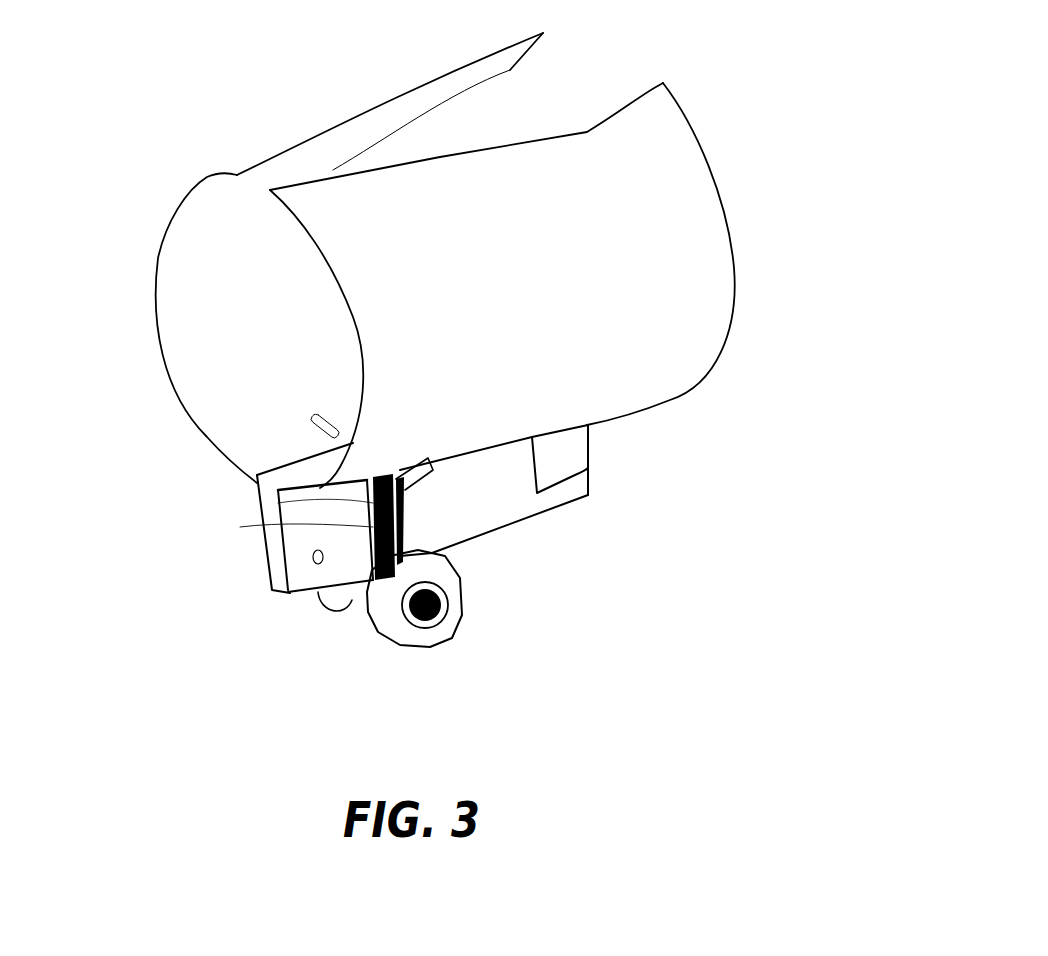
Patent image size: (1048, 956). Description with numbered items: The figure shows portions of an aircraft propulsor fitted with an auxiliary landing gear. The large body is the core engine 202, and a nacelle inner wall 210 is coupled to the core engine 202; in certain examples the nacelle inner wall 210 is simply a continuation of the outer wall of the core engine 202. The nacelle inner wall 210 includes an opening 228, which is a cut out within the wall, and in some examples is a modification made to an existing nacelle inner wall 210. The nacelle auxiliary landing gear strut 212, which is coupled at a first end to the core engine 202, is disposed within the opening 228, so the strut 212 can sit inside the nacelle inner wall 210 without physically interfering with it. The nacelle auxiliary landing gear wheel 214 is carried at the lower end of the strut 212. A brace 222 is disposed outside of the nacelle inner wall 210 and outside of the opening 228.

The core engine 202 is at (635, 282).
The nacelle inner wall 210 is at (505, 502).
The nacelle auxiliary landing gear strut 212 is at (263, 492).
The nacelle auxiliary landing gear wheel 214 is at (440, 622).
The brace 222 is at (410, 502).
The opening 228 is at (240, 527).